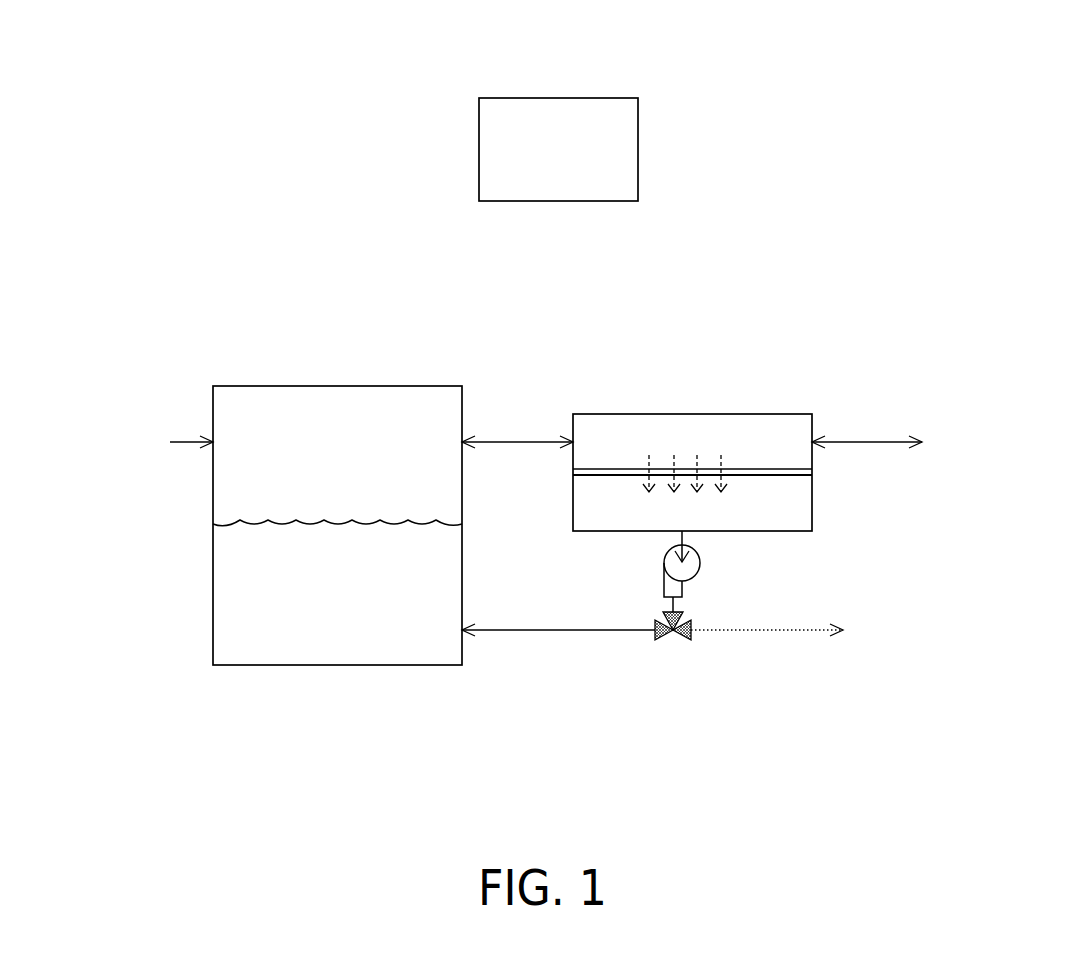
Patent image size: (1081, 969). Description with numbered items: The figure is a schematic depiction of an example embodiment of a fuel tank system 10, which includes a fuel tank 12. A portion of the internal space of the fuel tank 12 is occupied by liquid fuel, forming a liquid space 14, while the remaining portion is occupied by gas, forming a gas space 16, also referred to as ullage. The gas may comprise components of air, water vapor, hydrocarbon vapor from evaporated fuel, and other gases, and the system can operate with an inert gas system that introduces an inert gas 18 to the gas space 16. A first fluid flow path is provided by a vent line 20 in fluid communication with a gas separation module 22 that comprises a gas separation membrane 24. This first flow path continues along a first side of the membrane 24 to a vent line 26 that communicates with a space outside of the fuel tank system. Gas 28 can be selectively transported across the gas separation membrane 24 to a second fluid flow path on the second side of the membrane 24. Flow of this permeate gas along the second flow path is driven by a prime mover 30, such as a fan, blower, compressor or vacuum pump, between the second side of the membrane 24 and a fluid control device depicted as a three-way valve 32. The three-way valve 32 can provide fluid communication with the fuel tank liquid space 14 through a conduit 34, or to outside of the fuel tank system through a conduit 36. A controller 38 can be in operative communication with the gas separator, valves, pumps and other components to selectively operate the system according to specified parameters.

The fuel tank system 10 is at (920, 147).
The fuel tank 12 is at (400, 385).
The liquid space 14 is at (285, 640).
The gas space 16 is at (287, 417).
The inert gas 18 is at (183, 442).
The vent line 20 is at (511, 438).
The gas separation module 22 is at (625, 414).
The gas separation membrane 24 is at (750, 469).
The vent line 26 is at (867, 437).
The gas 28 is at (700, 458).
The prime mover 30 is at (700, 566).
The three-way valve 32 is at (673, 640).
The conduit 34 is at (545, 630).
The conduit 36 is at (777, 630).
The controller 38 is at (479, 143).